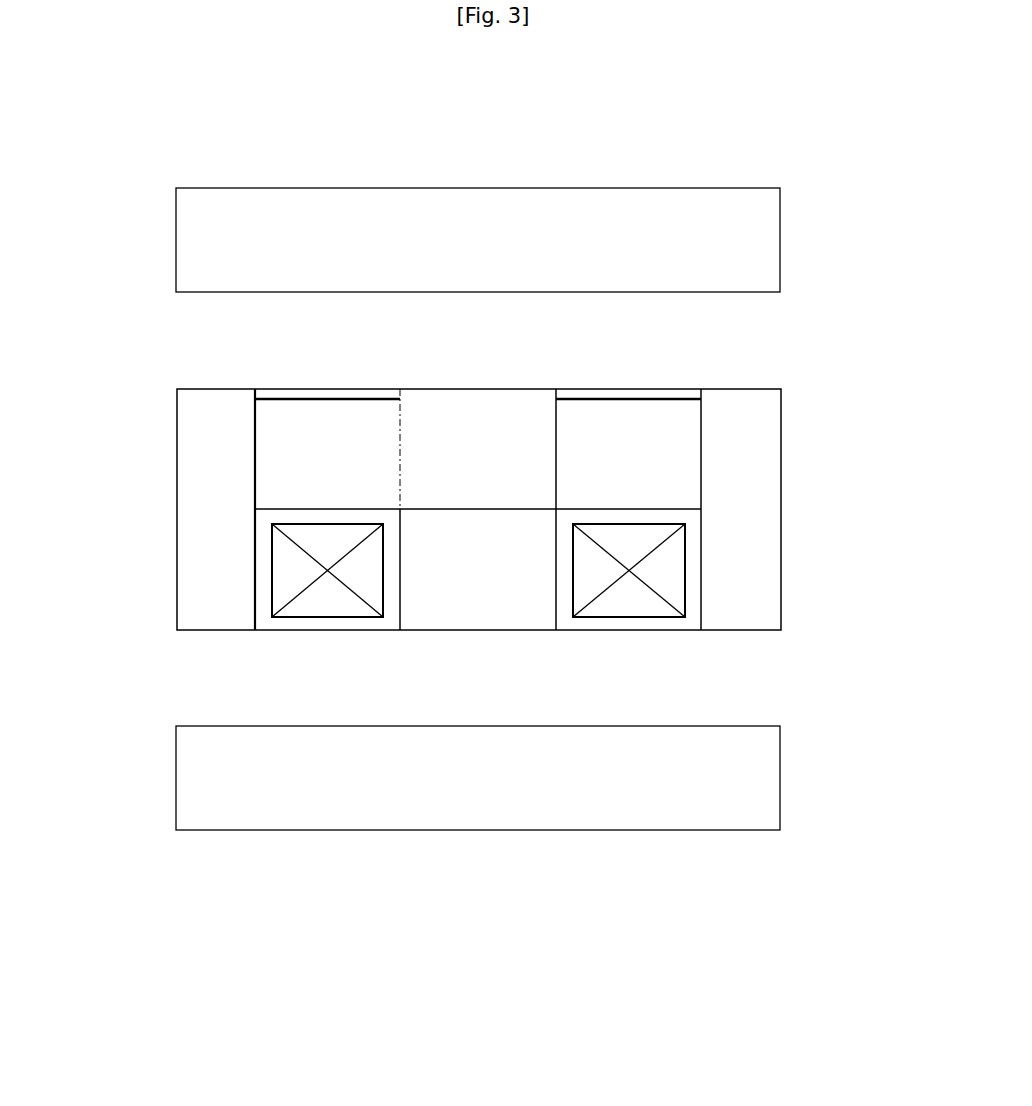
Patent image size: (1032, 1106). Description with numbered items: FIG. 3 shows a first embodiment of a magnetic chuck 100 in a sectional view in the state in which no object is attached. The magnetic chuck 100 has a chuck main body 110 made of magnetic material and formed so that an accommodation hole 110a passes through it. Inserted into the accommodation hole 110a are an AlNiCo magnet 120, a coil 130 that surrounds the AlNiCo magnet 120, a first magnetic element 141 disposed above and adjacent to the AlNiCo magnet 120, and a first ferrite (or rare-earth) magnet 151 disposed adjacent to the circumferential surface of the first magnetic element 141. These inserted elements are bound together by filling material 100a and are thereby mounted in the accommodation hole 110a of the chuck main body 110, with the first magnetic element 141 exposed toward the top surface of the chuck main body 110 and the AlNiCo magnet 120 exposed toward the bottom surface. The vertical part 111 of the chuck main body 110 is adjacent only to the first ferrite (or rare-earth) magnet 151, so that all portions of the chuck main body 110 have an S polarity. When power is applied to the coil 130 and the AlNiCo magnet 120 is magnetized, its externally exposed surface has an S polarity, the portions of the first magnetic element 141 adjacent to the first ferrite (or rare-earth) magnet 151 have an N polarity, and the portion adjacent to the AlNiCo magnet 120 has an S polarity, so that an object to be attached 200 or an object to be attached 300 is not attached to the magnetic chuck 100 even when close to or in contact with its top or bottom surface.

The magnetic chuck 100 is at (799, 434).
The filling material 100a is at (293, 627).
The chuck main body 110 is at (175, 568).
The accommodation hole 110a is at (699, 570).
The vertical part 111 is at (188, 488).
The AlNiCo magnet 120 is at (478, 633).
The coil 130 is at (629, 619).
The first magnetic element 141 is at (447, 398).
The first ferrite (or rare-earth) magnet 151 is at (300, 395).
The object to be attached 200 is at (477, 186).
The object to be attached 300 is at (478, 832).